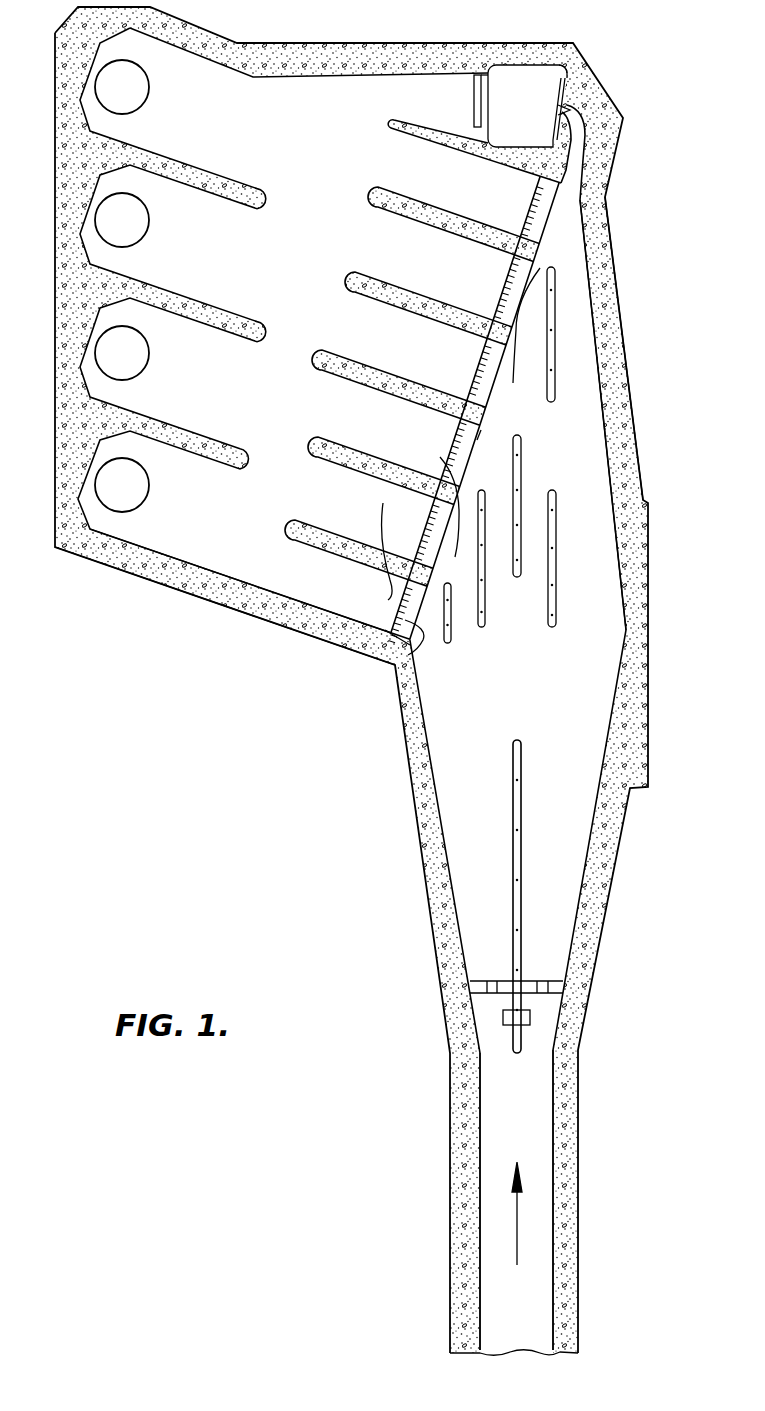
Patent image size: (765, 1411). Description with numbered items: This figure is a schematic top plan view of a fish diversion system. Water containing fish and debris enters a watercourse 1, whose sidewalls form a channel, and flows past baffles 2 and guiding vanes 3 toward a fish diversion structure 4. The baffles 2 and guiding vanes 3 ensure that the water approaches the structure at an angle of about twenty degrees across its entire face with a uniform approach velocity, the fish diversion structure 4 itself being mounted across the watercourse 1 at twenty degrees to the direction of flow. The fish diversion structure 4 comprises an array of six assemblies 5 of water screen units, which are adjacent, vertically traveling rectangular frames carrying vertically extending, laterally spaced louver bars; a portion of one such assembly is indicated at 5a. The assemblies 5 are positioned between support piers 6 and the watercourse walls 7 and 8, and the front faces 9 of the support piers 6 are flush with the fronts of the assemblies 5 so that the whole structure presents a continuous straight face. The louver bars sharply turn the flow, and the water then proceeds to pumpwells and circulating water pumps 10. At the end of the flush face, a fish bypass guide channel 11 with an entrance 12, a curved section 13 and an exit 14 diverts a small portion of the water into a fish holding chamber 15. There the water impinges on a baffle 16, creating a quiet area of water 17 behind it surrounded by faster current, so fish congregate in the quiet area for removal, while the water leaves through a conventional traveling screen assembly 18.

The watercourse 1 is at (540, 1131).
The baffles 2 is at (563, 993).
The guiding vanes 3 is at (520, 483).
The fish diversion structure 4 is at (395, 660).
The assemblies of water screen units 5 is at (527, 213).
The grate plate portion 5a is at (478, 440).
The support piers 6 is at (357, 274).
The watercourse wall 7 is at (362, 637).
The watercourse wall 8 is at (523, 160).
The front faces 9 is at (461, 461).
The circulating water pumps 10 is at (122, 286).
The fish bypass guide channel 11 is at (598, 160).
The entrance 12 is at (572, 190).
The curved section 13 is at (584, 116).
The exit 14 is at (579, 106).
The fish holding chamber 15 is at (523, 67).
The baffle 16 is at (567, 76).
The quiet area of water 17 is at (527, 106).
The traveling screen assembly 18 is at (497, 73).